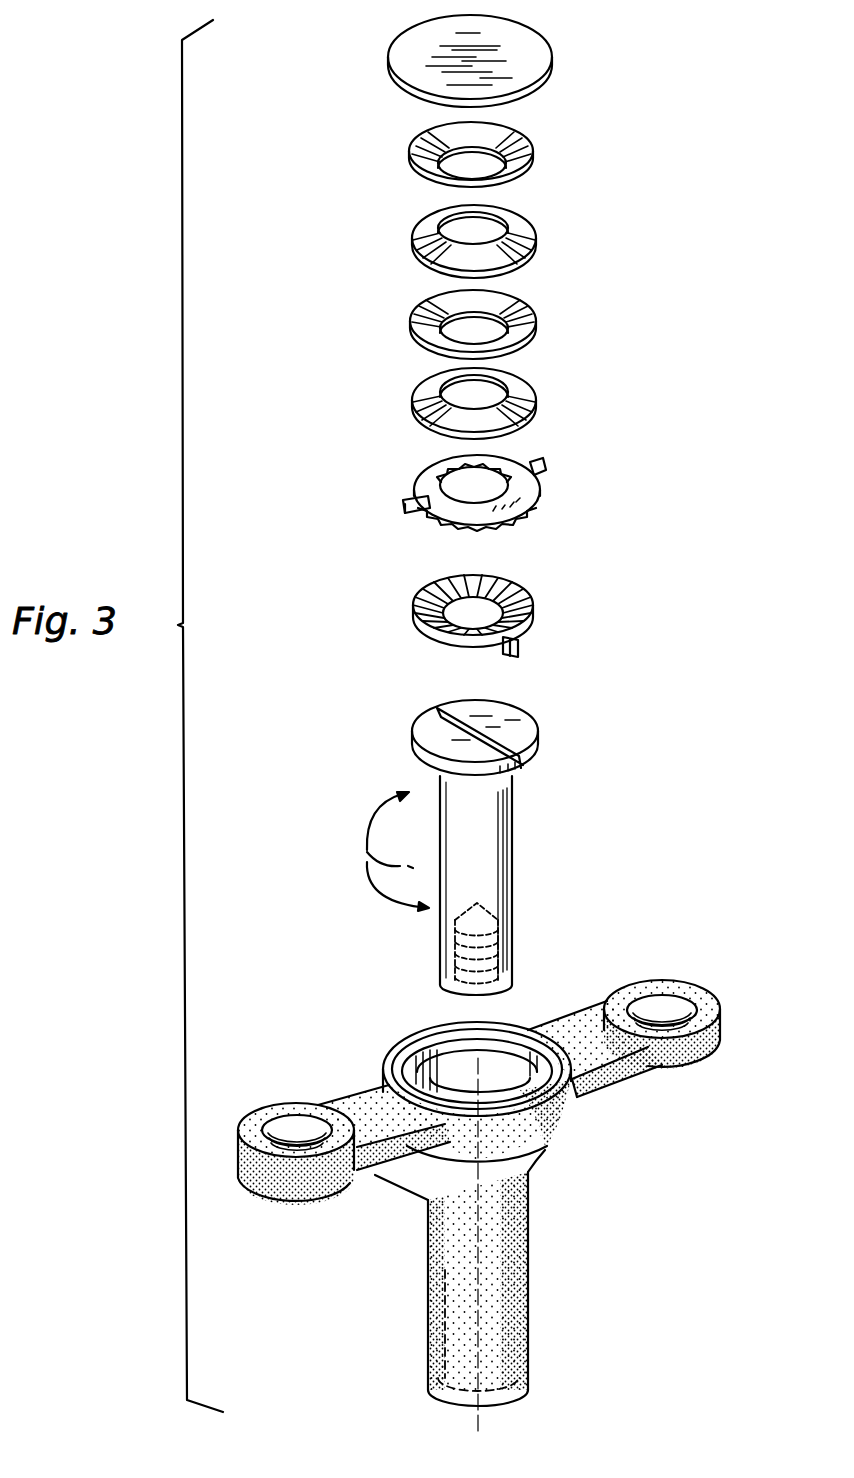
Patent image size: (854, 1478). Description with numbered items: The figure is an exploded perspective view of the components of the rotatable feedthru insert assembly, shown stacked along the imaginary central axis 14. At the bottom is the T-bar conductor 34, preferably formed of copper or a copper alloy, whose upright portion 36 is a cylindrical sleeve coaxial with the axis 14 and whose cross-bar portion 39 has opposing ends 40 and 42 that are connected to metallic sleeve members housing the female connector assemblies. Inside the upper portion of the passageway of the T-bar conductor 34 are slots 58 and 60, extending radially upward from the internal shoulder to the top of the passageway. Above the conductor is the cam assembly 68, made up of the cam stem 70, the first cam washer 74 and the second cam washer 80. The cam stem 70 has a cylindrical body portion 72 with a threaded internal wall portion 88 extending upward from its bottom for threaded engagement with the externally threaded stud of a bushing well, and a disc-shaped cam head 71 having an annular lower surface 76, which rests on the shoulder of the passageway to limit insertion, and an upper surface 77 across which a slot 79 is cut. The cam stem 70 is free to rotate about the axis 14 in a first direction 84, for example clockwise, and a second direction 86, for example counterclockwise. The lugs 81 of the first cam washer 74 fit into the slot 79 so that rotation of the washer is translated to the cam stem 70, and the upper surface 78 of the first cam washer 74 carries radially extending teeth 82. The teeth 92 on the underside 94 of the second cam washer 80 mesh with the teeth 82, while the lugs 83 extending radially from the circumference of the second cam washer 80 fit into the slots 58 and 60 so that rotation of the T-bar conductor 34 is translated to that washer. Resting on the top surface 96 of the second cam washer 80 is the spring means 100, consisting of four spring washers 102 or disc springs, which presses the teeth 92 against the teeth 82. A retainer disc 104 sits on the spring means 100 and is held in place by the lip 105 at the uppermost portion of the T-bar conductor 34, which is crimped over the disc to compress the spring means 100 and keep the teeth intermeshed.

The imaginary central axis 14 is at (475, 40).
The retainer disc 104 is at (522, 67).
The spring washer 102 is at (512, 150).
The spring means 100 is at (368, 272).
The second cam washer 80 is at (493, 478).
The lugs 83 is at (543, 463).
The teeth 92 is at (536, 514).
The underside 94 is at (524, 523).
The top surface 96 is at (430, 470).
The cam assembly 68 is at (400, 551).
The upper surface 78 is at (530, 592).
The teeth 82 is at (533, 620).
The first cam washer 74 is at (524, 624).
The lugs 81 is at (520, 651).
The slot 79 is at (453, 707).
The upper surface 77 is at (517, 725).
The cam head 71 is at (479, 726).
The annular lower surface 76 is at (533, 768).
The body portion 72 is at (503, 853).
The cam stem 70 is at (479, 836).
The threaded internal wall portion 88 is at (500, 950).
The first direction 84 is at (365, 823).
The second direction 86 is at (382, 913).
The lip 105 is at (423, 1035).
The slot 60 is at (523, 1058).
The slot 58 is at (451, 1077).
The opposing end 42 is at (727, 1046).
The opposing end 40 is at (278, 1202).
The cross-bar portion 39 is at (385, 1174).
The T-bar conductor 34 is at (476, 1193).
The upright portion 36 is at (522, 1268).